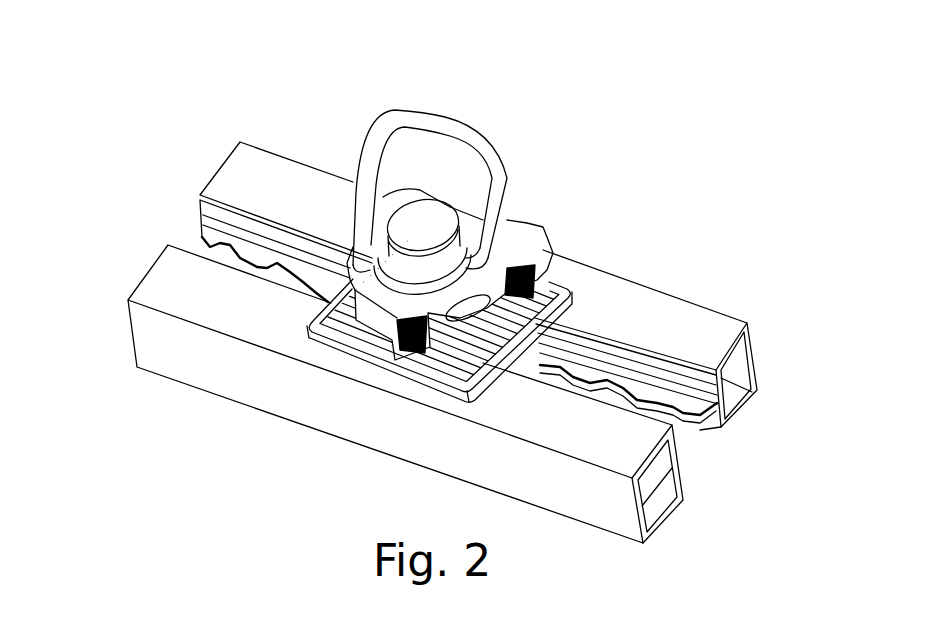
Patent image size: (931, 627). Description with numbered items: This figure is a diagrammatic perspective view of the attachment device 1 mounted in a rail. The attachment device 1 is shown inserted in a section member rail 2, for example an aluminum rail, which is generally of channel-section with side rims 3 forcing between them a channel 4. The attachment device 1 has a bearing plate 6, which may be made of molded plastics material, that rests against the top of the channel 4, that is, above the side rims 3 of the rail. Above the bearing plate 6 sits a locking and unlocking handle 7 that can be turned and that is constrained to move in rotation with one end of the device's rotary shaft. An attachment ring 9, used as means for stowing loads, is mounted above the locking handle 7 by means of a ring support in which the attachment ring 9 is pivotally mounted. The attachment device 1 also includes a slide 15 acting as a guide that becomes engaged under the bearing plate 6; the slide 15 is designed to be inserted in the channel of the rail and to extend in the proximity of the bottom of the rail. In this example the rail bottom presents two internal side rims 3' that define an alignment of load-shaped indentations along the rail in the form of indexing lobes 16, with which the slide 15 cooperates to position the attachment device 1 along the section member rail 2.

The attachment device 1 is at (557, 222).
The section member rail 2 is at (686, 318).
The side rims 3 is at (391, 320).
The internal side rims 3' is at (734, 464).
The channel 4 is at (745, 325).
The bearing plate 6 is at (565, 270).
The locking and unlocking handle 7 is at (520, 222).
The attachment ring 9 is at (445, 122).
The slide 15 is at (538, 320).
The indexing lobes 16 is at (273, 250).